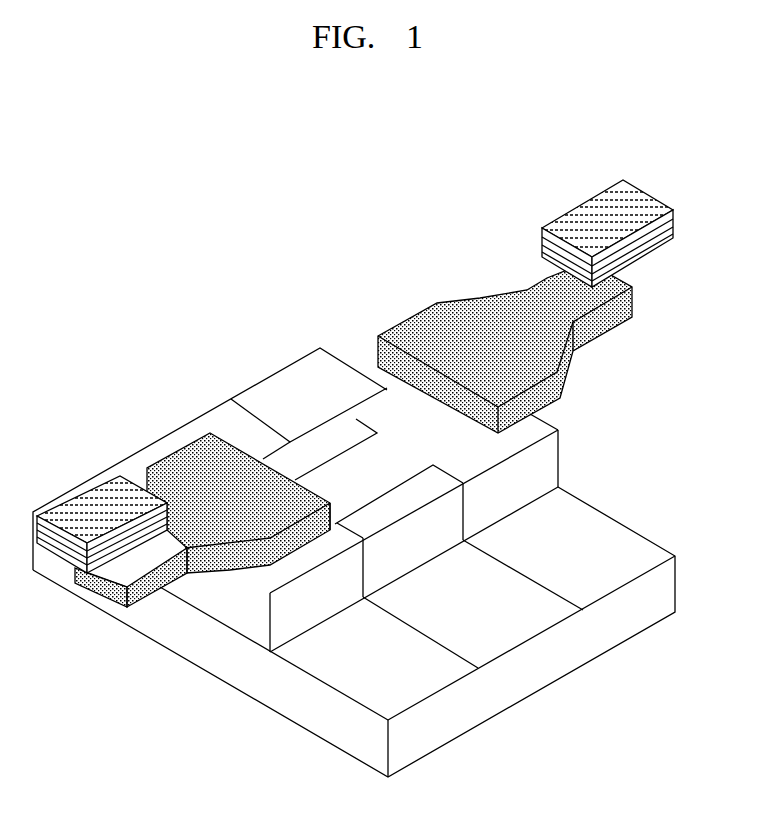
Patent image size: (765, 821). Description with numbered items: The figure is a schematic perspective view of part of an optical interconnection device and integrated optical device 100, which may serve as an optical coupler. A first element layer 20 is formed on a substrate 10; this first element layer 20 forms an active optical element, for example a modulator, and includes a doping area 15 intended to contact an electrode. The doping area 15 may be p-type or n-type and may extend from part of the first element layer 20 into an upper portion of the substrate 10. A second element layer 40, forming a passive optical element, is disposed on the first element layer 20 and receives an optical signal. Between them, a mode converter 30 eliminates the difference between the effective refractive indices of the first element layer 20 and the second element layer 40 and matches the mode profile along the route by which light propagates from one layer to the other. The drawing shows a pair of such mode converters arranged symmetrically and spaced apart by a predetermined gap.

The optical device 100 is at (189, 150).
The substrate 10 is at (630, 540).
The doping area 15 is at (510, 613).
The first element layer 20 is at (542, 458).
The mode converter 30 is at (468, 320).
The second element layer 40 is at (596, 220).